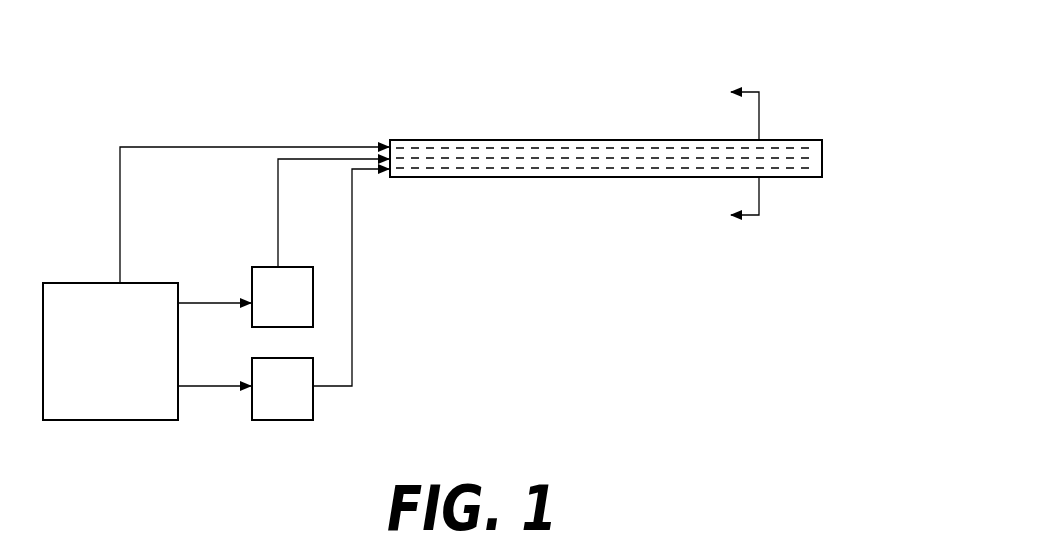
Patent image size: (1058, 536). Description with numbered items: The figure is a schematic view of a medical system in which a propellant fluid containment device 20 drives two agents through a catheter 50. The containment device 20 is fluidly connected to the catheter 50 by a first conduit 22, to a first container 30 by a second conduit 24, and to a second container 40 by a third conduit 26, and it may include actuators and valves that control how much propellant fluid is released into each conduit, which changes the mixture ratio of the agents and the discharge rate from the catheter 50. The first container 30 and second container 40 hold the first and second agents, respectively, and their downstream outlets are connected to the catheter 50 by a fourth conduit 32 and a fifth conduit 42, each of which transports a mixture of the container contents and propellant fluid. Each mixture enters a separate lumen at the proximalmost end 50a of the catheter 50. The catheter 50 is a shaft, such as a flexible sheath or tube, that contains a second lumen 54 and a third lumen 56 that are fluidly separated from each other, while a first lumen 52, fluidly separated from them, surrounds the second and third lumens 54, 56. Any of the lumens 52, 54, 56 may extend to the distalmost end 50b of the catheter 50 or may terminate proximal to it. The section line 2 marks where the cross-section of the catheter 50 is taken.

The propellant fluid containment device 20 is at (99, 362).
The first conduit 22 is at (119, 220).
The second conduit 24 is at (212, 302).
The third conduit 26 is at (213, 387).
The first container 30 is at (271, 309).
The fourth conduit 32 is at (277, 180).
The second container 40 is at (271, 399).
The fifth conduit 42 is at (353, 300).
The catheter 50 is at (635, 128).
The proximalmost end 50a is at (382, 183).
The distalmost end 50b is at (829, 173).
The first lumen 52 is at (597, 172).
The second lumen 54 is at (810, 151).
The third lumen 56 is at (780, 163).
The line 2- 2 is at (745, 156).